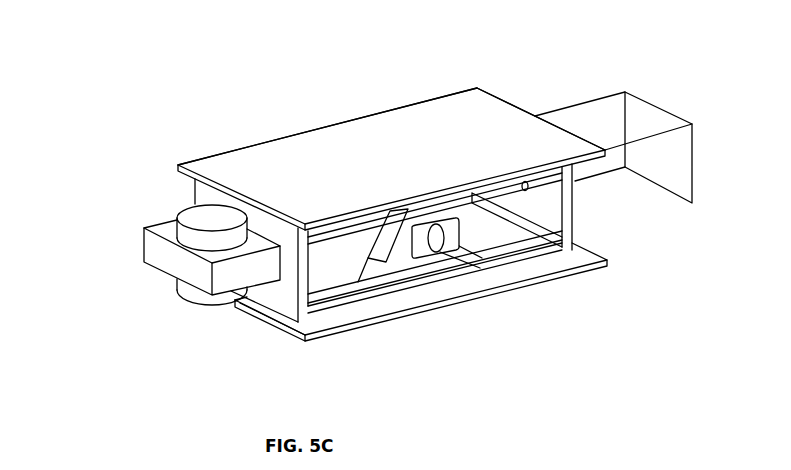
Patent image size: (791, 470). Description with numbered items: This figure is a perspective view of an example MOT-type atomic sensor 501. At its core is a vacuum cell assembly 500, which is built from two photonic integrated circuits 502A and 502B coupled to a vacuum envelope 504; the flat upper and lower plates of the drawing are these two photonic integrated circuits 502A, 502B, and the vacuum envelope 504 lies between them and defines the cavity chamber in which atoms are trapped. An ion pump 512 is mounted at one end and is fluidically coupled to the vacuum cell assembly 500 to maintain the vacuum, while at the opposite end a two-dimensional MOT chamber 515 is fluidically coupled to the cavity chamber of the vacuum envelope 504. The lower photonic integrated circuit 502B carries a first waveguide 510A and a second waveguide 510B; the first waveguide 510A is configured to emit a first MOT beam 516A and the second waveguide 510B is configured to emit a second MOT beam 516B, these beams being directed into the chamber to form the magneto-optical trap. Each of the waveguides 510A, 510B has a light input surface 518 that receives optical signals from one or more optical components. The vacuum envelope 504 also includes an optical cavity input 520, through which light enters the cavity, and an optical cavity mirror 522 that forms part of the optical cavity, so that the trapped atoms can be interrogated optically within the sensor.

The vacuum cell assembly 500 is at (308, 80).
The atomic sensor 501 is at (136, 80).
The photonic integrated circuit 502A is at (203, 162).
The photonic integrated circuit 502B is at (598, 265).
The vacuum envelope 504 is at (283, 318).
The first waveguide 510A is at (396, 275).
The second waveguide 510B is at (494, 272).
The ion pump 512 is at (188, 210).
The two-dimensional MOT chamber 515 is at (608, 102).
The first MOT beam 516A is at (374, 259).
The second MOT beam 516B is at (470, 208).
The light input surface 518 is at (438, 246).
The optical cavity input 520 is at (450, 262).
The optical cavity mirror 522 is at (516, 273).